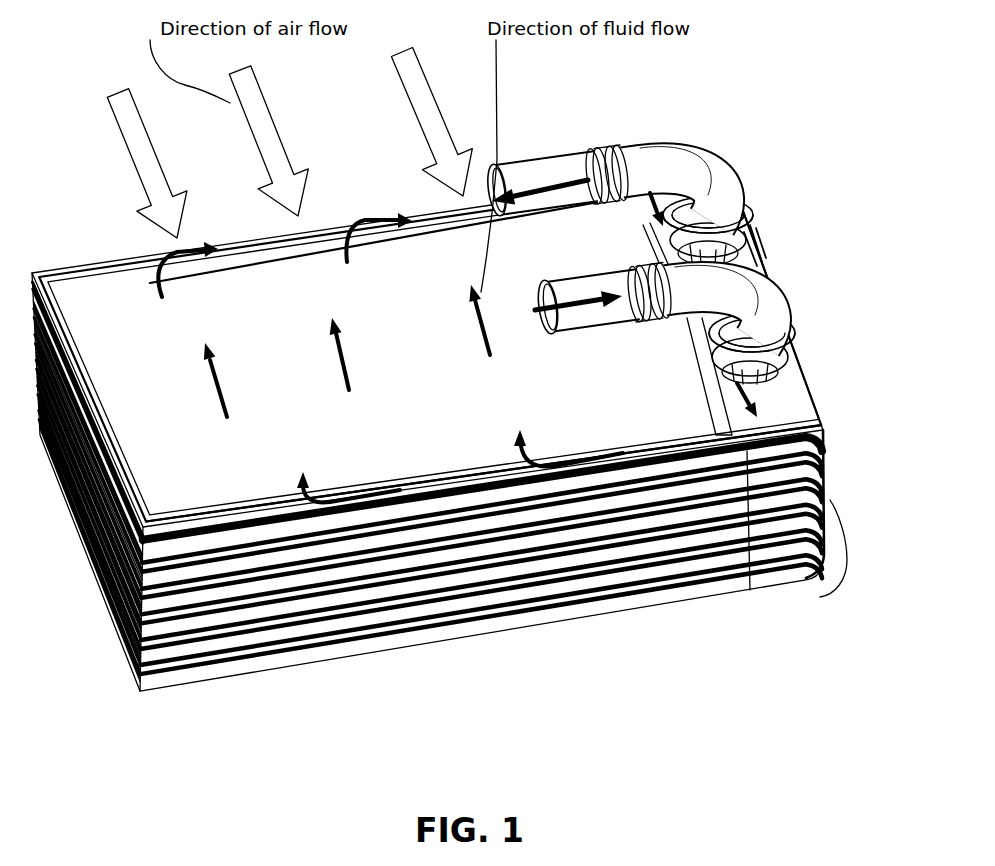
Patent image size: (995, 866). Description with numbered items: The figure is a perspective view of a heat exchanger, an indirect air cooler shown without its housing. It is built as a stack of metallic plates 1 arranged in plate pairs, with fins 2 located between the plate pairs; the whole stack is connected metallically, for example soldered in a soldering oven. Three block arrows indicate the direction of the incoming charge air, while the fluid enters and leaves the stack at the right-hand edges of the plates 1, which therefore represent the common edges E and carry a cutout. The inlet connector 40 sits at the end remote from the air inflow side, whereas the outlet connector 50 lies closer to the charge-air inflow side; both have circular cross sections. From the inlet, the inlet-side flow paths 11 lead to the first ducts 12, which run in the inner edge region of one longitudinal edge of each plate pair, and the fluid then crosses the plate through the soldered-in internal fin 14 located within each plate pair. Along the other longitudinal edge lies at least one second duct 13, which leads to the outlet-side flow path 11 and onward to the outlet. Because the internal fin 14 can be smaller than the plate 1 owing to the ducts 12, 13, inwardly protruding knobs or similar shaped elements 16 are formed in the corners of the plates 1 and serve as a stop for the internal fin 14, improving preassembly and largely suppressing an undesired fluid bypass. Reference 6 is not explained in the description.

The metallic plates 1 is at (447, 436).
The fins 2 is at (250, 640).
The fluid port region 6 is at (723, 392).
The flow paths 11 is at (657, 245).
The first ducts 12 is at (513, 470).
The second duct 13 is at (322, 228).
The internal fin 14 is at (428, 369).
The shaped elements 16 is at (45, 268).
The inlet connector 40 is at (750, 230).
The outlet connector 50 is at (660, 153).
The common edges E is at (770, 393).